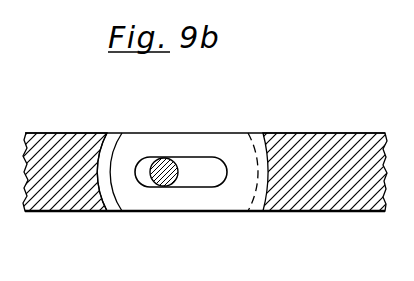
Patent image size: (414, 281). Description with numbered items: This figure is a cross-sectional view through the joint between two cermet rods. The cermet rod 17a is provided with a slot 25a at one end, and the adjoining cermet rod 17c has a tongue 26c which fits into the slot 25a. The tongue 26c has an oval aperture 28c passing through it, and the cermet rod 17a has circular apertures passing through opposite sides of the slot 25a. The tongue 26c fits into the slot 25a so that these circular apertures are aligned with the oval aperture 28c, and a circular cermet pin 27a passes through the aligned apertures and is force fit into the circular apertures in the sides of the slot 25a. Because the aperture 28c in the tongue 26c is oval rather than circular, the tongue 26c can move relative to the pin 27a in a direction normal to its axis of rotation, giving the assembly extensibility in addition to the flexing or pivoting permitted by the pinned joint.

The cermet rod 17a is at (58, 144).
The cermet rod 17c is at (343, 143).
The slot 25a is at (116, 147).
The tongue 26c is at (140, 193).
The circular cermet pin 27a is at (160, 189).
The oval aperture 28c is at (198, 190).